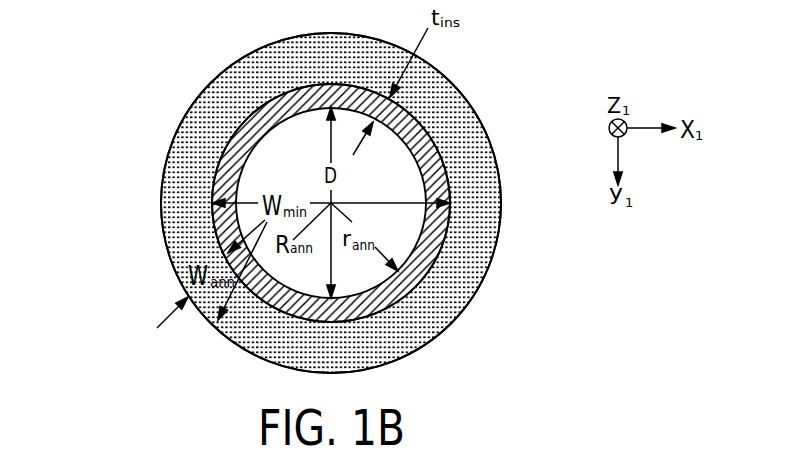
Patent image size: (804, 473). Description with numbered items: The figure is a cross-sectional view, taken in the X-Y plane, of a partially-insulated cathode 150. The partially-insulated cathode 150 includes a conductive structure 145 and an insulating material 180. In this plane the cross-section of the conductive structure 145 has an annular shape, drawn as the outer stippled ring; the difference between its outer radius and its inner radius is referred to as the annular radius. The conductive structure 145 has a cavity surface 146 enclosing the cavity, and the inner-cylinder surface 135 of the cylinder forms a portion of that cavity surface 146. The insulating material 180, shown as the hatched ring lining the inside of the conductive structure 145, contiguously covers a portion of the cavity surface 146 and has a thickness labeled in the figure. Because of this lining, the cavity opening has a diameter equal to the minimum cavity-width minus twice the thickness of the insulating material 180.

The inner-cylinder surface 135 is at (450, 134).
The conductive structure 145 is at (475, 287).
The cavity surface 146 is at (453, 187).
The partially-insulated cathode 150 is at (530, 223).
The insulating material 180 is at (405, 142).